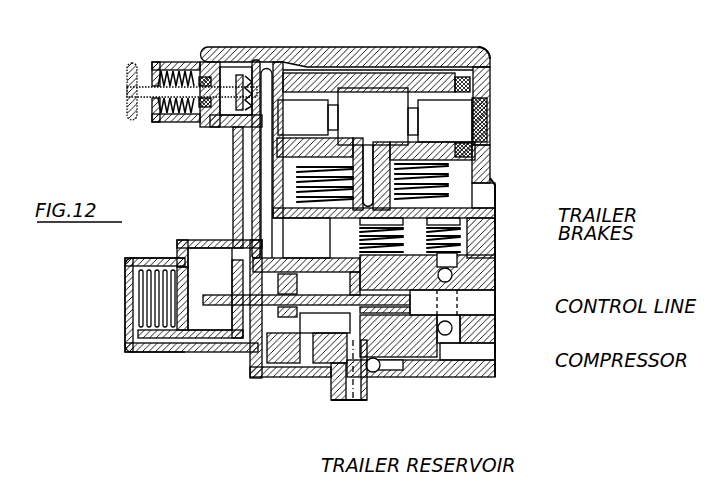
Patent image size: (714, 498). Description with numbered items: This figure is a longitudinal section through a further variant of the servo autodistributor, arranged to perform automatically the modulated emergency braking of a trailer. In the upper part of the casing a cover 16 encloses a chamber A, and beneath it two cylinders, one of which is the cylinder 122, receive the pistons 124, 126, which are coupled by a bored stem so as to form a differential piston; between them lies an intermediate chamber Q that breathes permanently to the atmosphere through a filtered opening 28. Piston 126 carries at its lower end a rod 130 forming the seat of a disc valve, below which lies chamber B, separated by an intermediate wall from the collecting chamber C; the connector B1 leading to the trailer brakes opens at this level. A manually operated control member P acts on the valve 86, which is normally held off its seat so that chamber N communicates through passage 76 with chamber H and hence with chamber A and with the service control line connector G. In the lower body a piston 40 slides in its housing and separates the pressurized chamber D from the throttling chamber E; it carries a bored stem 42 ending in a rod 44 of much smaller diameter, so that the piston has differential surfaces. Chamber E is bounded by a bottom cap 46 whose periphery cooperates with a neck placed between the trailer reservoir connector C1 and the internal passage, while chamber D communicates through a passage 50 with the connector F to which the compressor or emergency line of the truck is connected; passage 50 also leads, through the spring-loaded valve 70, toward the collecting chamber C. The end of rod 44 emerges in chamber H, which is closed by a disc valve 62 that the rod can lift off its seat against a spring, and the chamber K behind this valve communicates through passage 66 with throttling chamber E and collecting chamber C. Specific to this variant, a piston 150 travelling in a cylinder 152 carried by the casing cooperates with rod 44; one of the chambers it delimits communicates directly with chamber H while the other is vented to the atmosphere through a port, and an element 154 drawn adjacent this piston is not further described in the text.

The cover 16 is at (447, 50).
The piston 124 is at (478, 50).
The passage 76 is at (236, 158).
The chamber A is at (395, 73).
The intermediate chamber Q is at (305, 107).
The rod 130 is at (372, 150).
The opening 28 is at (487, 120).
The piston 126 is at (488, 150).
The chamber B is at (458, 177).
The cylinder 122 is at (494, 182).
The trailer brakes port B1 is at (483, 198).
The piston 40 is at (296, 259).
The valve 70 is at (458, 253).
The service control line connector G is at (485, 305).
The connector F is at (485, 354).
The trailer reservoir connector C1 is at (345, 400).
The bottom cap 46 is at (370, 380).
The passage 50 is at (407, 368).
The bored stem 42 is at (410, 318).
The disc valve 62 is at (172, 275).
The chamber K is at (140, 300).
The chamber H is at (213, 280).
The collecting chamber C is at (287, 228).
The cylinder 152 is at (212, 336).
The passage 66 is at (140, 352).
The rod 44 is at (207, 328).
The piston 150 is at (240, 355).
The seal 154 is at (271, 355).
The pressurized chamber D is at (288, 345).
The throttling chamber E is at (328, 328).
The chamber N is at (207, 127).
The control member P is at (127, 75).
The valve 86 is at (240, 72).